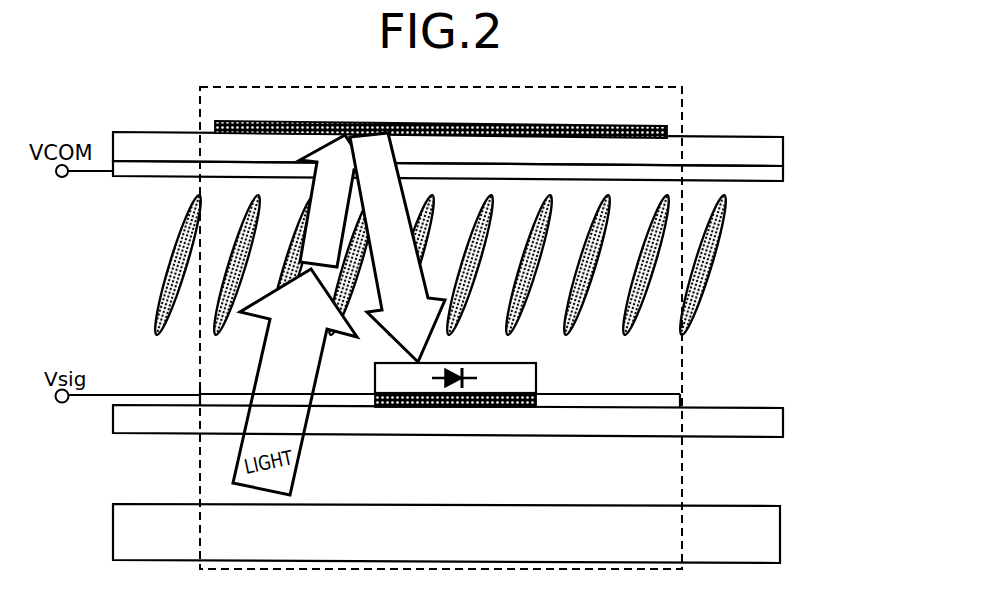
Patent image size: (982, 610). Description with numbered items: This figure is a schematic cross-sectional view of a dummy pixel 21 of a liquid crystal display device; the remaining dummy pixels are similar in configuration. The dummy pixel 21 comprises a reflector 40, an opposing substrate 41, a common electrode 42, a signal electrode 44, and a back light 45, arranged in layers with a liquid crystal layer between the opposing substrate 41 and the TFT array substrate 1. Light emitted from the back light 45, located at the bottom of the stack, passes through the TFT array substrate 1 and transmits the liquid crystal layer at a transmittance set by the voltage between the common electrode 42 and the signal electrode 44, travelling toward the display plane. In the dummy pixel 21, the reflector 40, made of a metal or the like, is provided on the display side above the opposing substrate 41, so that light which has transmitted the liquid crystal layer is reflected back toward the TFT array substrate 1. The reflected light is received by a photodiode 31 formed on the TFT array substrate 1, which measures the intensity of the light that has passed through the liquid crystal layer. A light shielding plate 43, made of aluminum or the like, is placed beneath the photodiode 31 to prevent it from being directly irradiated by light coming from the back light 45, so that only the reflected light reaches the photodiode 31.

The TFT array substrate 1 is at (783, 423).
The dummy pixel 21 is at (682, 115).
The photodiode 31 is at (536, 378).
The reflector 40 is at (462, 121).
The opposing substrate 41 is at (783, 151).
The common electrode 42 is at (783, 179).
The light shielding plate 43 is at (485, 407).
The signal electrode 44 is at (680, 394).
The back light 45 is at (780, 535).